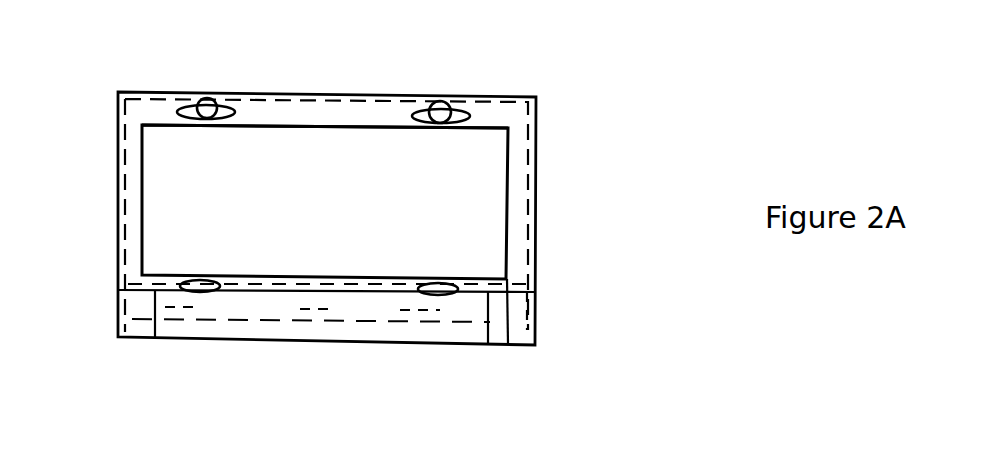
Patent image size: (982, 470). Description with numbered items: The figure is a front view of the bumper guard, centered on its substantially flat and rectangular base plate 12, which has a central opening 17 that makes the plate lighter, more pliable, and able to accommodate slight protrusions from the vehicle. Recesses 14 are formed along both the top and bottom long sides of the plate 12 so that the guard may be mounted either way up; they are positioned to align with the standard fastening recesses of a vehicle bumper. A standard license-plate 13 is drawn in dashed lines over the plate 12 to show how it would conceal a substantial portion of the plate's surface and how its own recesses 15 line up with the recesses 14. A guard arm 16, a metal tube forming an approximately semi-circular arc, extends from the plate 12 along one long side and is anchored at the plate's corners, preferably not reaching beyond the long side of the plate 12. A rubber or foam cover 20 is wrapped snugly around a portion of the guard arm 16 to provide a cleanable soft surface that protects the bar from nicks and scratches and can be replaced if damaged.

The base plate 12 is at (533, 195).
The license-plate 13 is at (366, 99).
The recess 14 is at (222, 105).
The recesses 15 is at (200, 102).
The guard arm 16 is at (512, 340).
The central opening 17 is at (140, 200).
The cover 20 is at (329, 340).